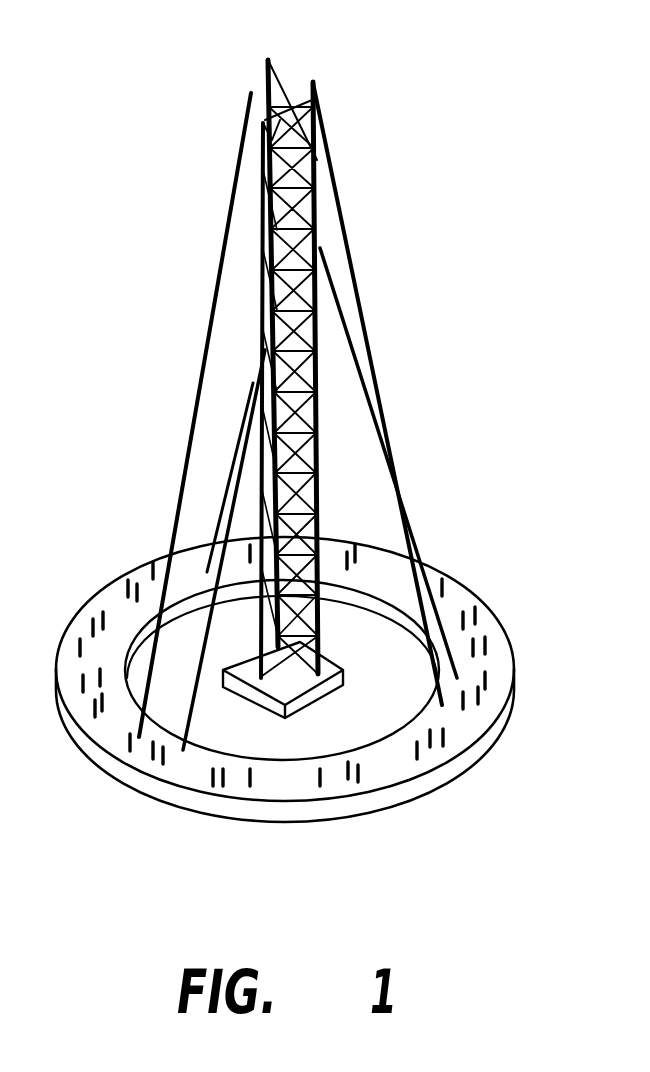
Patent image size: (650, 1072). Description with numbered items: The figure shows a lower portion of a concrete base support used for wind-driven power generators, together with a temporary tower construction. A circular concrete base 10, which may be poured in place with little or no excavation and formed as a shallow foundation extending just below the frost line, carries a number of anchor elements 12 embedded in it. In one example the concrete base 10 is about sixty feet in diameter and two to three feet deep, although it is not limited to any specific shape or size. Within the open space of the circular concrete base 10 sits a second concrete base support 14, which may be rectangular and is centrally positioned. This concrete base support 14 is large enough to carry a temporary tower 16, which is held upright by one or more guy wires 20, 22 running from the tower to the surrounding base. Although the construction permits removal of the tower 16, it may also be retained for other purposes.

The concrete base 10 is at (475, 590).
The anchor elements 12 is at (127, 583).
The second concrete base support 14 is at (320, 700).
The temporary tower 16 is at (320, 227).
The guy wire 20 is at (210, 317).
The guy wire 22 is at (320, 403).